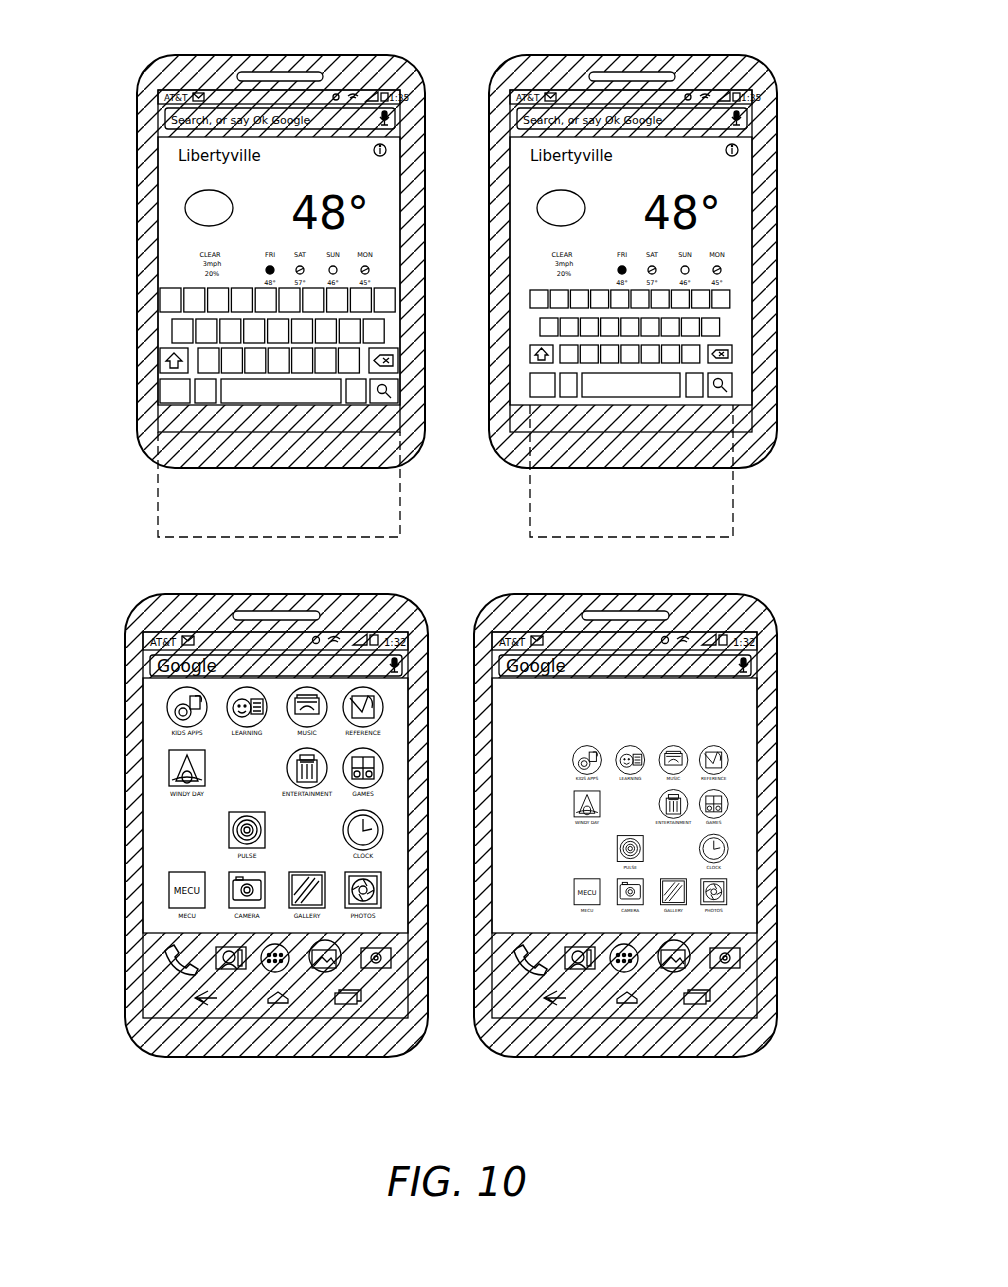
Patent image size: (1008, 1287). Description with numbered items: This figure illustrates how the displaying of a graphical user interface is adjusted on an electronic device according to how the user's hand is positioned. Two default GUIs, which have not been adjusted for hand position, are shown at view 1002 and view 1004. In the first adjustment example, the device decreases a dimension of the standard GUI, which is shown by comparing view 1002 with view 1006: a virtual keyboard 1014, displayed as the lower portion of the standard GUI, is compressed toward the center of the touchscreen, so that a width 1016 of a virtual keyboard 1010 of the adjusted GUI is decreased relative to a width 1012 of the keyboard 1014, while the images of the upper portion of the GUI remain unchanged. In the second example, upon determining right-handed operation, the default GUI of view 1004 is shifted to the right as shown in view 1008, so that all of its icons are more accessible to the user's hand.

The view 1002 is at (112, 87).
The view 1004 is at (112, 637).
The view 1006 is at (801, 72).
The view 1008 is at (803, 620).
The virtual keyboard 1010 is at (737, 322).
The width 1012 is at (158, 510).
The virtual keyboard 1014 is at (163, 338).
The width 1016 is at (733, 500).